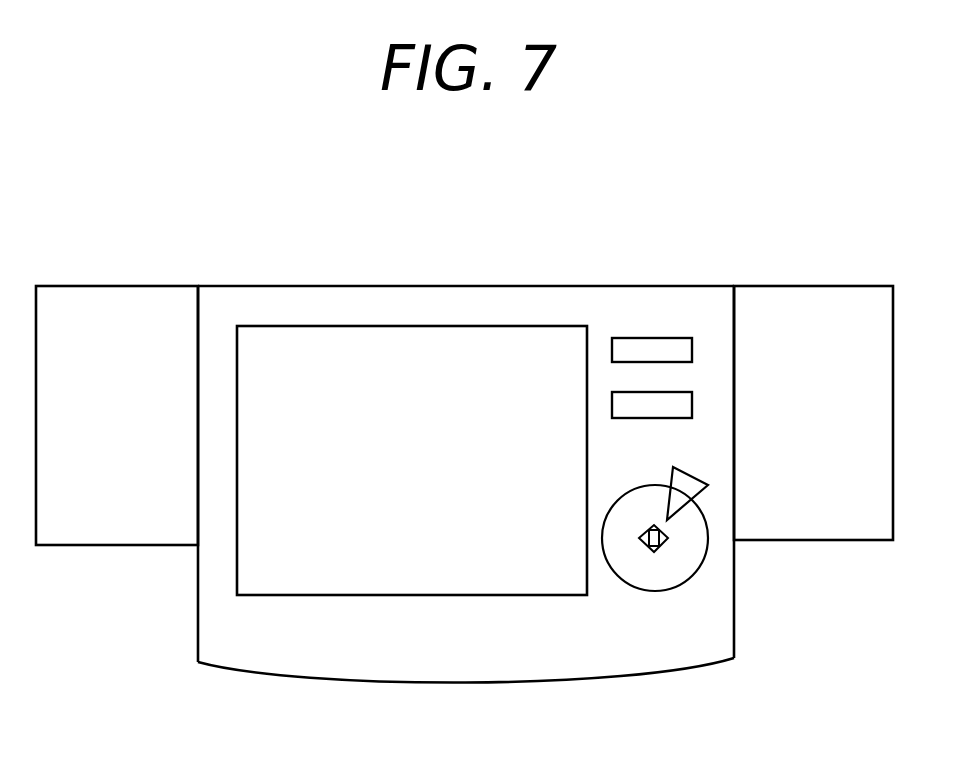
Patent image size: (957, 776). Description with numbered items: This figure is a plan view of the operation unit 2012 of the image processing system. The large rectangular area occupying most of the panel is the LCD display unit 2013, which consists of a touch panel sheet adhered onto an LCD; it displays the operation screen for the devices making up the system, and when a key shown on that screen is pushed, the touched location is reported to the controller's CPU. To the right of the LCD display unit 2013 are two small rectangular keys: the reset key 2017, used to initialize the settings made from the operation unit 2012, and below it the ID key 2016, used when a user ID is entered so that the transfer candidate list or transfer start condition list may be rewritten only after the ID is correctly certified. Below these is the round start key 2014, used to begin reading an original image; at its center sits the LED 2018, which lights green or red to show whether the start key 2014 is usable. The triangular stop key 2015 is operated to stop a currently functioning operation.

The operation unit 2012 is at (463, 286).
The LCD display unit 2013 is at (410, 597).
The start key 2014 is at (657, 593).
The stop key 2015 is at (692, 478).
The ID key 2016 is at (692, 405).
The reset key 2017 is at (692, 348).
The LED 2018 is at (663, 545).